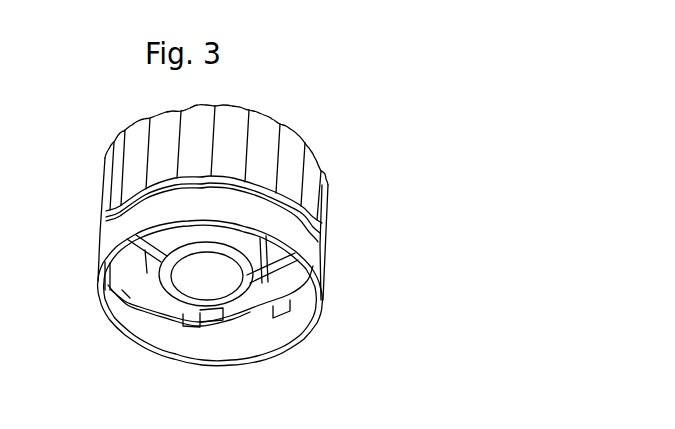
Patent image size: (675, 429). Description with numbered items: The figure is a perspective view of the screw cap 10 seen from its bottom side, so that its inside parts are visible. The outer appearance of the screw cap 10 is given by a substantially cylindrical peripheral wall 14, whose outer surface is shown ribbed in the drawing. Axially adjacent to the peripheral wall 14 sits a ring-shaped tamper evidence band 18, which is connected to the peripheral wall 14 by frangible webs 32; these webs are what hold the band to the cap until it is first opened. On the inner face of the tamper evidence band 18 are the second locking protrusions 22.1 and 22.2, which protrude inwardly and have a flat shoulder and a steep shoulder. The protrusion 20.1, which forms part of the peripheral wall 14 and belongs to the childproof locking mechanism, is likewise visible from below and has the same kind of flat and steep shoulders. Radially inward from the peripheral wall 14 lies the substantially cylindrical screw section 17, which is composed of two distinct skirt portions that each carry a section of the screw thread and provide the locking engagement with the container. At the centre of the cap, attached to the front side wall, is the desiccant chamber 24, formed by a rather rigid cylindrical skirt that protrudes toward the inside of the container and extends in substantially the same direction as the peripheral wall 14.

The screw cap 10 is at (296, 78).
The peripheral wall 14 is at (327, 217).
The screw section 17 is at (147, 252).
The tamper evidence band 18 is at (297, 338).
The protrusion 20.1 is at (205, 318).
The protrusion 22.1 is at (317, 307).
The protrusion 22.2 is at (105, 293).
The desiccant chamber 24 is at (268, 318).
The frangible webs 32 is at (173, 187).